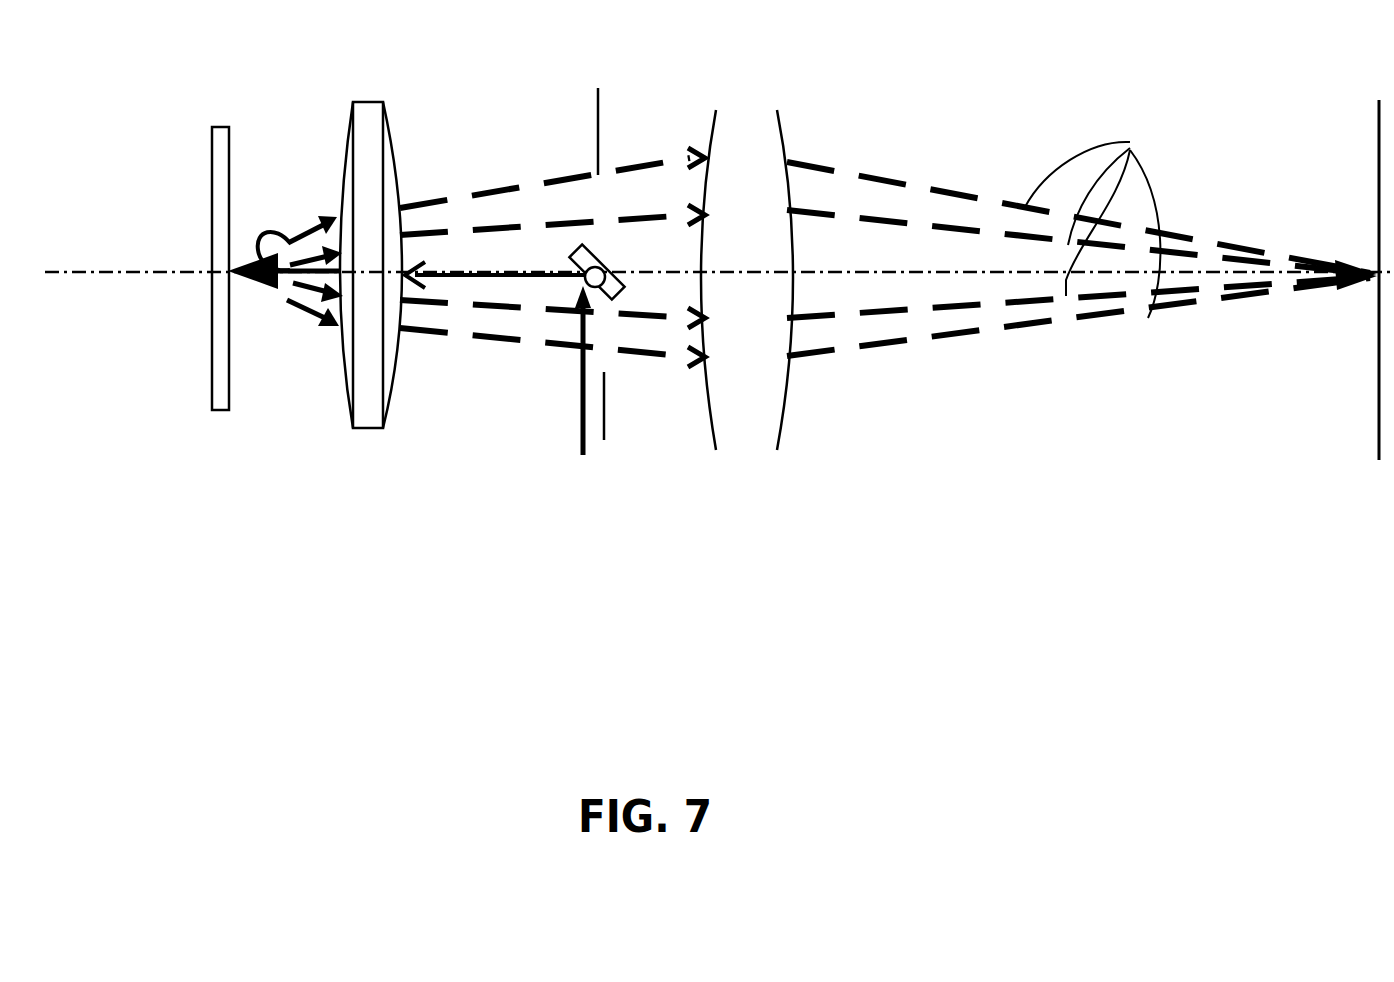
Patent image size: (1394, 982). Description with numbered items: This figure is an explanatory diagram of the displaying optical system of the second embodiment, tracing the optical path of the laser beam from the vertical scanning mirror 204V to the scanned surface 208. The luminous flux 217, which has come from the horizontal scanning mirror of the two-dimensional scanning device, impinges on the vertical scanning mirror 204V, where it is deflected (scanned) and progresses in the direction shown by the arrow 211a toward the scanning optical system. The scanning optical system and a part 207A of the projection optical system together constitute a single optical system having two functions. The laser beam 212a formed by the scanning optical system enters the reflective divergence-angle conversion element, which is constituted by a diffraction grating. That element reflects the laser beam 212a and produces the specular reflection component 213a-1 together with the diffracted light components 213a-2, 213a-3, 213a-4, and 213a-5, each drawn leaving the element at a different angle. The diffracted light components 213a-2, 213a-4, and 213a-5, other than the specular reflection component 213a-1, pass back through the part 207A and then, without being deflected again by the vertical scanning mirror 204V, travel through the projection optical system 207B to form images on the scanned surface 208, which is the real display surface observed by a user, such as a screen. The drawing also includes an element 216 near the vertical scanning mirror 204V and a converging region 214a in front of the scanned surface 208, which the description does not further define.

The laser beam 212a is at (174, 268).
The part of the projection optical system 207A is at (371, 237).
The projection optical system 207B is at (747, 254).
The optical element / diaphragm 216 is at (605, 147).
The vertical scanning mirror 204V is at (598, 258).
The arrow 211a is at (495, 269).
The luminous flux 217 is at (563, 370).
The scanned surface 208 is at (1375, 240).
The converging wavefronts / focal point 214a is at (1103, 217).
The specular reflection component 213a-1 is at (290, 243).
The diffracted light component 213a-2 is at (567, 347).
The diffracted light beam (third order) 213a-3 is at (613, 318).
The diffracted light component 213a-4 is at (672, 222).
The diffracted light component 213a-5 is at (573, 178).